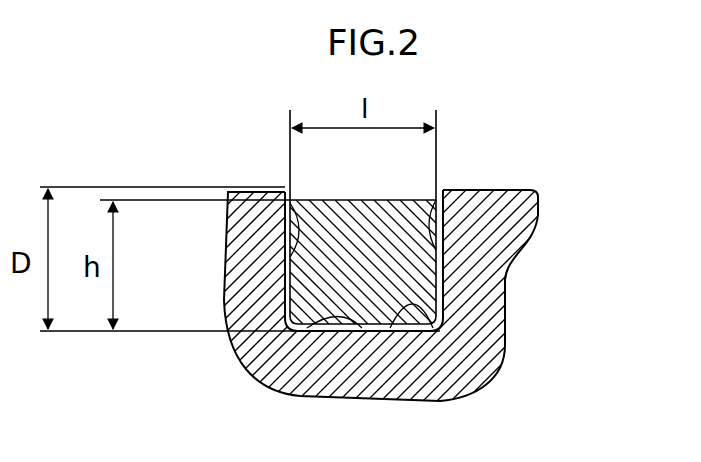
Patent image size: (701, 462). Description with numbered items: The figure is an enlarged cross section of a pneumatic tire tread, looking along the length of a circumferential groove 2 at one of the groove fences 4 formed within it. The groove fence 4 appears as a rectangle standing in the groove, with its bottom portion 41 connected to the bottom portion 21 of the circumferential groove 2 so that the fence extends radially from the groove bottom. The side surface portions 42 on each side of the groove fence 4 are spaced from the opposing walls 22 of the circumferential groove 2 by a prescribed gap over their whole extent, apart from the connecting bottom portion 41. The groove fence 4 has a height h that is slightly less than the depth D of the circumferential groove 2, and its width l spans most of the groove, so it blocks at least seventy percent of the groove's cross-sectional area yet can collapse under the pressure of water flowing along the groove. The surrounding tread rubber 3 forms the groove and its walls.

The circumferential groove 2 is at (330, 200).
The bottom portion of the circumferential groove 21 is at (410, 320).
The opposing walls of the circumferential groove 22 is at (285, 193).
The housing body 3 is at (223, 250).
The groove fence 4 is at (380, 203).
The bottom portion of the groove fence 41 is at (265, 373).
The side surface portions of the groove fence 42 is at (287, 290).